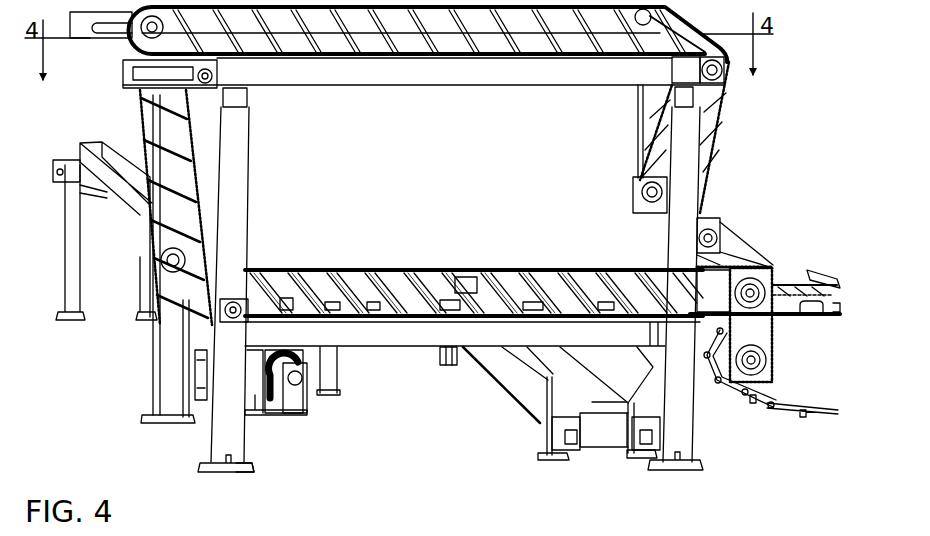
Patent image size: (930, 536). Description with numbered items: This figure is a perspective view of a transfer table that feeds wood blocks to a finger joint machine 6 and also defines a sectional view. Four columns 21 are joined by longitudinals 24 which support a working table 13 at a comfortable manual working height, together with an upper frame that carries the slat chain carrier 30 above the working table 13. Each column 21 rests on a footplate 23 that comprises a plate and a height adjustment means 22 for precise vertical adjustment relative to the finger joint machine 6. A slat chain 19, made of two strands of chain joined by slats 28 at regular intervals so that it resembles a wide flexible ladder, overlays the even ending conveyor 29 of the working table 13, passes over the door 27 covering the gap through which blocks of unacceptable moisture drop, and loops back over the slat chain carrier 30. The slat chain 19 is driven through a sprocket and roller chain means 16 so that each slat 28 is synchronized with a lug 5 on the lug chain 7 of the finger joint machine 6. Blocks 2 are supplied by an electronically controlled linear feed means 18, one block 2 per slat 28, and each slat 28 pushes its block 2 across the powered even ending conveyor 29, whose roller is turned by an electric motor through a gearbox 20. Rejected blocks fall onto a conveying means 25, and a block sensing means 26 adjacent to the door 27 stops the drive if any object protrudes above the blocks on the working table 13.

The block 2 is at (393, 270).
The lug 5 is at (769, 414).
The finger joint machine 6 is at (827, 360).
The lug chain 7 is at (745, 399).
The working table 13 is at (510, 346).
The sprocket and roller chain means 16 is at (773, 363).
The linear feed means 18 is at (79, 142).
The slat chain 19 is at (138, 117).
The gearbox 20 is at (201, 362).
The column 21 is at (206, 452).
The height adjustment means 22 is at (226, 472).
The footplate 23 is at (252, 472).
The longitudinal 24 is at (438, 352).
The conveying means 25 is at (545, 458).
The block sensing means 26 is at (640, 350).
The door 27 is at (562, 266).
The slat 28 is at (498, 278).
The even ending conveyor 29 is at (313, 268).
The slat chain carrier 30 is at (452, 83).